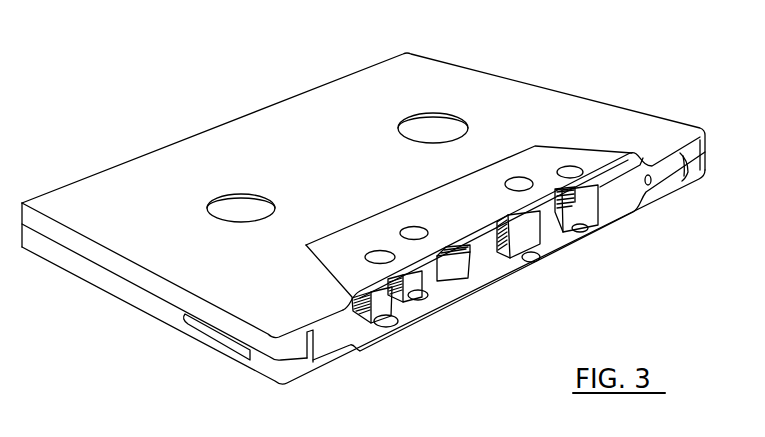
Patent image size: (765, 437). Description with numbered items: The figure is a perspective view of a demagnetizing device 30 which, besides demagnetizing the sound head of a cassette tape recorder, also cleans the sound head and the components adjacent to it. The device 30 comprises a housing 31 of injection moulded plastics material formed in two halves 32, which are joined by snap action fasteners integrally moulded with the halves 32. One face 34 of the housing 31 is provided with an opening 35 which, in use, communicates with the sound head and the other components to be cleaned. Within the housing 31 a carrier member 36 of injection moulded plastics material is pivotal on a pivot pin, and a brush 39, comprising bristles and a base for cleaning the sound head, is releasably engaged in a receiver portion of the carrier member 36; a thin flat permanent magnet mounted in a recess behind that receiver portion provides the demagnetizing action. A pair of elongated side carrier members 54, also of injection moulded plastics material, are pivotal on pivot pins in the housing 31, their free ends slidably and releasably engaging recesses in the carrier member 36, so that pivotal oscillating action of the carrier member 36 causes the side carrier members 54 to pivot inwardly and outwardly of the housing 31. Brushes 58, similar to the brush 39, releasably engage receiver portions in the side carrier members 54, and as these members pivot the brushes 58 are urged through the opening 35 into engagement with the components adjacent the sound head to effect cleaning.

The demagnetizing device 30 is at (543, 60).
The housing 31 is at (124, 174).
The halves 32 is at (418, 72).
The face 34 is at (302, 362).
The opening 35 is at (430, 293).
The carrier member 36 is at (430, 275).
The brush 39 is at (470, 282).
The side carrier members 54 is at (630, 180).
The brushes 58 is at (380, 305).